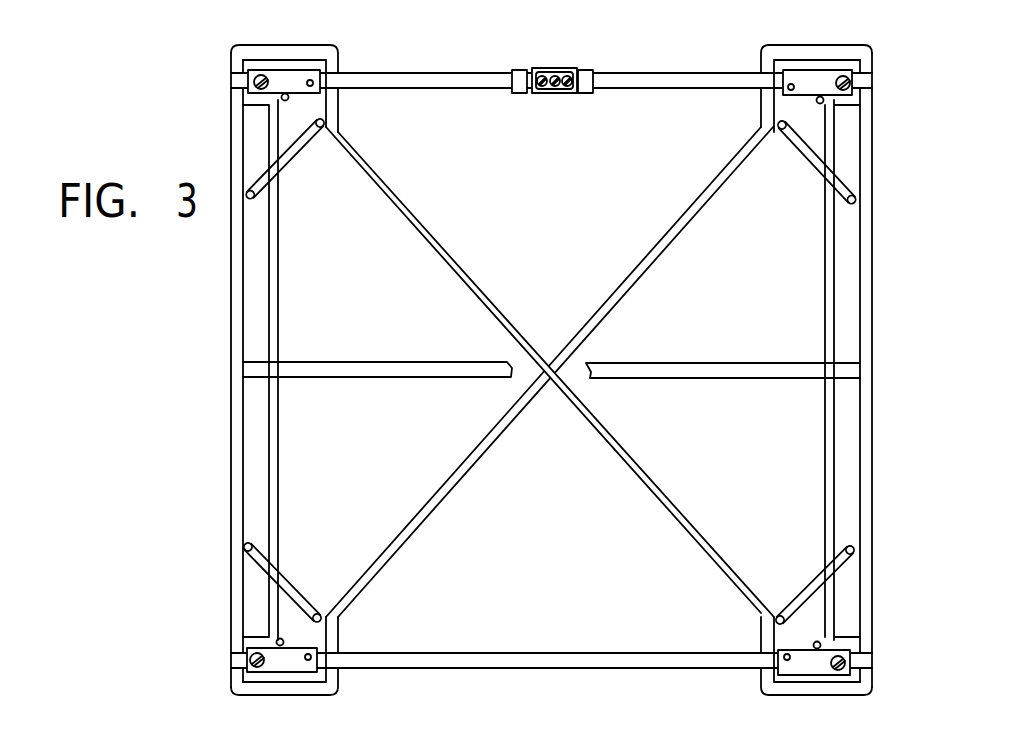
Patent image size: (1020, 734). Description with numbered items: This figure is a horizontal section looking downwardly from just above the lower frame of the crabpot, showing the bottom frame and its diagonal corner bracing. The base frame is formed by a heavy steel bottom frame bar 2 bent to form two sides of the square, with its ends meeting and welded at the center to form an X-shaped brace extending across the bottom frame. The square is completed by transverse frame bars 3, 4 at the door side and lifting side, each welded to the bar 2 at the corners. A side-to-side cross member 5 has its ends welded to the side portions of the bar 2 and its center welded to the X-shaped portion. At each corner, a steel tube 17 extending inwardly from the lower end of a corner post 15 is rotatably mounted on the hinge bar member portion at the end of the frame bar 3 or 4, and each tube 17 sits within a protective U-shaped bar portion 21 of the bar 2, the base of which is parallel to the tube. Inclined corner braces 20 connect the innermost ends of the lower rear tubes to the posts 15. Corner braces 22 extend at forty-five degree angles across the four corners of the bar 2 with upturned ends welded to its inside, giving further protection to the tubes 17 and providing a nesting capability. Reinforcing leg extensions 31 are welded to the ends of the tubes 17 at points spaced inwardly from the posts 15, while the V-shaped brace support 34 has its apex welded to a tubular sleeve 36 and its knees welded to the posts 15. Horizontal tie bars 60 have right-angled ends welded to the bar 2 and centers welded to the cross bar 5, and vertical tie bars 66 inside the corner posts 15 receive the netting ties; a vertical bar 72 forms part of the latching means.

The bottom frame bar 2 is at (232, 401).
The transverse frame bar 3 is at (553, 652).
The transverse frame bar 4 is at (408, 90).
The cross member 5 is at (420, 379).
The corner post 15 is at (247, 95).
The steel tube 17 is at (287, 73).
The inclined corner brace 20 is at (313, 82).
The U-shaped bar portion 21 is at (268, 46).
The corner brace 22 is at (281, 170).
The reinforcing leg extension 31 is at (318, 650).
The V-shaped brace support 34 is at (566, 90).
The tubular sleeve 36 is at (540, 68).
The tie bar 60 is at (277, 249).
The vertical tie bar 66 is at (288, 102).
The vertical bar 72 is at (554, 90).